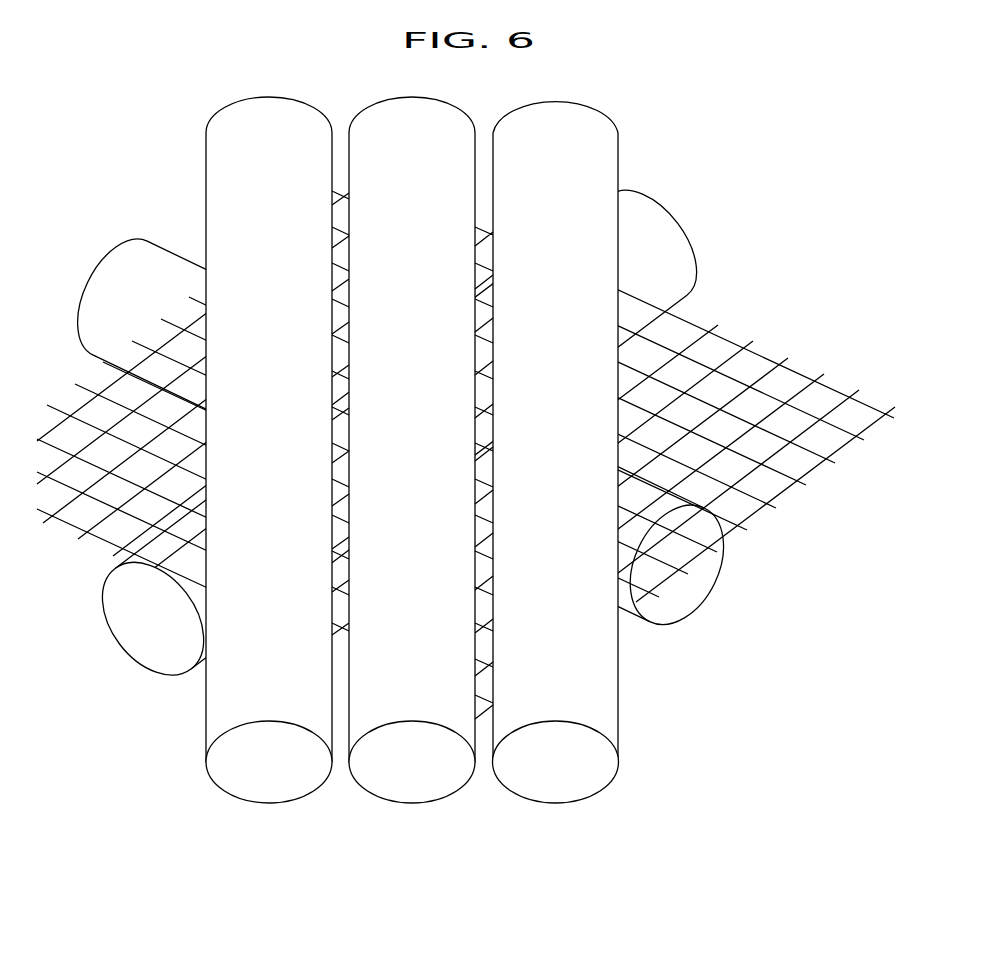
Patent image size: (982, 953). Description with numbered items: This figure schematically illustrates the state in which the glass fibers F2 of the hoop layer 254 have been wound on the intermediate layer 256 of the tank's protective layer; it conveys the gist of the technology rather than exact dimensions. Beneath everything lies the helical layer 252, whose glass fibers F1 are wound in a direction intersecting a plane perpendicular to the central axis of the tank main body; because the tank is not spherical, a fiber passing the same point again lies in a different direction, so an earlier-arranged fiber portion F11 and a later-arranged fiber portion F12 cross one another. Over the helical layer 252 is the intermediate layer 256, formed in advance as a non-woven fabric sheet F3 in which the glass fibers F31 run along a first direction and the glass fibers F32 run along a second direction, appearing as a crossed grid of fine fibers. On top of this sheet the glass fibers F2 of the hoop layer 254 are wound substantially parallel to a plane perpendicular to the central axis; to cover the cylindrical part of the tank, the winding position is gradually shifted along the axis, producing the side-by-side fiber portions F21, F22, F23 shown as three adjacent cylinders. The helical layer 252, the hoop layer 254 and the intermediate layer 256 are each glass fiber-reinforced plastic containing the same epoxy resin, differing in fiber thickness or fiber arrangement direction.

The glass fibers of the helical layer F1 is at (401, 419).
The fiber portion F11 is at (662, 263).
The fiber portion F12 is at (98, 285).
The glass fibers of the hoop layer F2 is at (408, 477).
The fiber portion F21 is at (270, 762).
The fiber portion F22 is at (412, 762).
The fiber portion F23 is at (557, 762).
The non-woven fabric sheet F3 is at (78, 374).
The glass fibers F31 is at (753, 353).
The glass fibers F32 is at (807, 470).
The helical layer 252 is at (395, 447).
The hoop layer 254 is at (452, 477).
The intermediate layer 256 is at (697, 418).